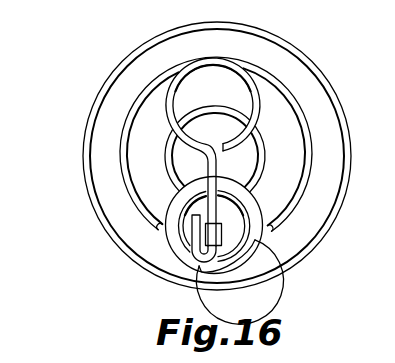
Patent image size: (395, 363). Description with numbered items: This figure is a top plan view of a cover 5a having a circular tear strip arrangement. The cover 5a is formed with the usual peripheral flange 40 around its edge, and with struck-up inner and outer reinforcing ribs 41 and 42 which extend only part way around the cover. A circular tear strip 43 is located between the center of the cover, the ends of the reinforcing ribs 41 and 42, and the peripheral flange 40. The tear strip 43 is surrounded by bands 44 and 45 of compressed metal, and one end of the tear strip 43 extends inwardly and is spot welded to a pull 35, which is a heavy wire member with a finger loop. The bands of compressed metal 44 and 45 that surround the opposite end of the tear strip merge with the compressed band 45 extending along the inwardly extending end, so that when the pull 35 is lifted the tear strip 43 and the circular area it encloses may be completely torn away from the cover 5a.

The cover 5a is at (82, 126).
The peripheral flange 40 is at (310, 38).
The outer reinforcing rib 42 is at (285, 95).
The inner reinforcing rib 41 is at (254, 137).
The pull 35 is at (168, 165).
The band of compressed metal 45 is at (263, 220).
The circular tear strip 43 is at (255, 234).
The band of compressed metal 44 is at (245, 210).